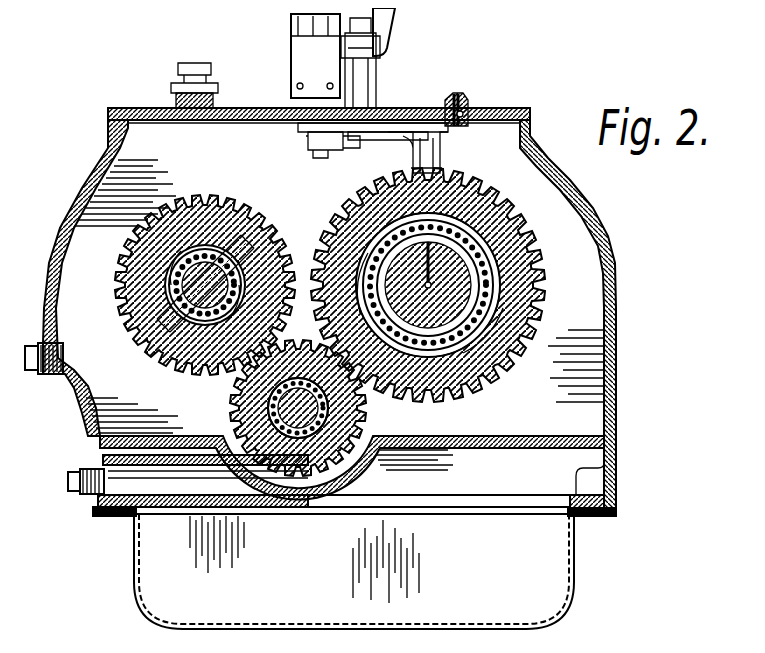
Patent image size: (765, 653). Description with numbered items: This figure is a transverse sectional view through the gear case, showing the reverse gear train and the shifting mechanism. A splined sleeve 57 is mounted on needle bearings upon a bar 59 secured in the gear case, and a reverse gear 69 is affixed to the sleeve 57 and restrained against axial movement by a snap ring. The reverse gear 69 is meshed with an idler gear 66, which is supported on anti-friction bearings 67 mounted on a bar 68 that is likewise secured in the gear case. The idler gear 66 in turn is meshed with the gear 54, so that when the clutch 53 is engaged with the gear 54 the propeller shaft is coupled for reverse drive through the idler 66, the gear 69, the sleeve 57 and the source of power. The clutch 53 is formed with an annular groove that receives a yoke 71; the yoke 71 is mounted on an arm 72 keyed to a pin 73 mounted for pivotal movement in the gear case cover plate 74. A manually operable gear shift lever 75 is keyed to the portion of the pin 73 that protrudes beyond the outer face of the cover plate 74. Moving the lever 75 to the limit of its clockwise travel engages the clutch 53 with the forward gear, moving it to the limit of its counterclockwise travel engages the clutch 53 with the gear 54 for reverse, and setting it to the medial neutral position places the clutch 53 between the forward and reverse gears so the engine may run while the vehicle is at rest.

The clutch 53 is at (537, 298).
The gear 54 is at (320, 312).
The splined sleeve 57 is at (126, 292).
The bar 59 is at (220, 191).
The idler gear 66 is at (357, 397).
The anti-friction bearings 67 is at (282, 442).
The bar 68 is at (228, 397).
The reverse gear 69 is at (147, 355).
The yoke 71 is at (527, 233).
The arm 72 is at (392, 130).
The pin 73 is at (358, 79).
The gear case cover plate 74 is at (488, 100).
The gear shift lever 75 is at (373, 38).